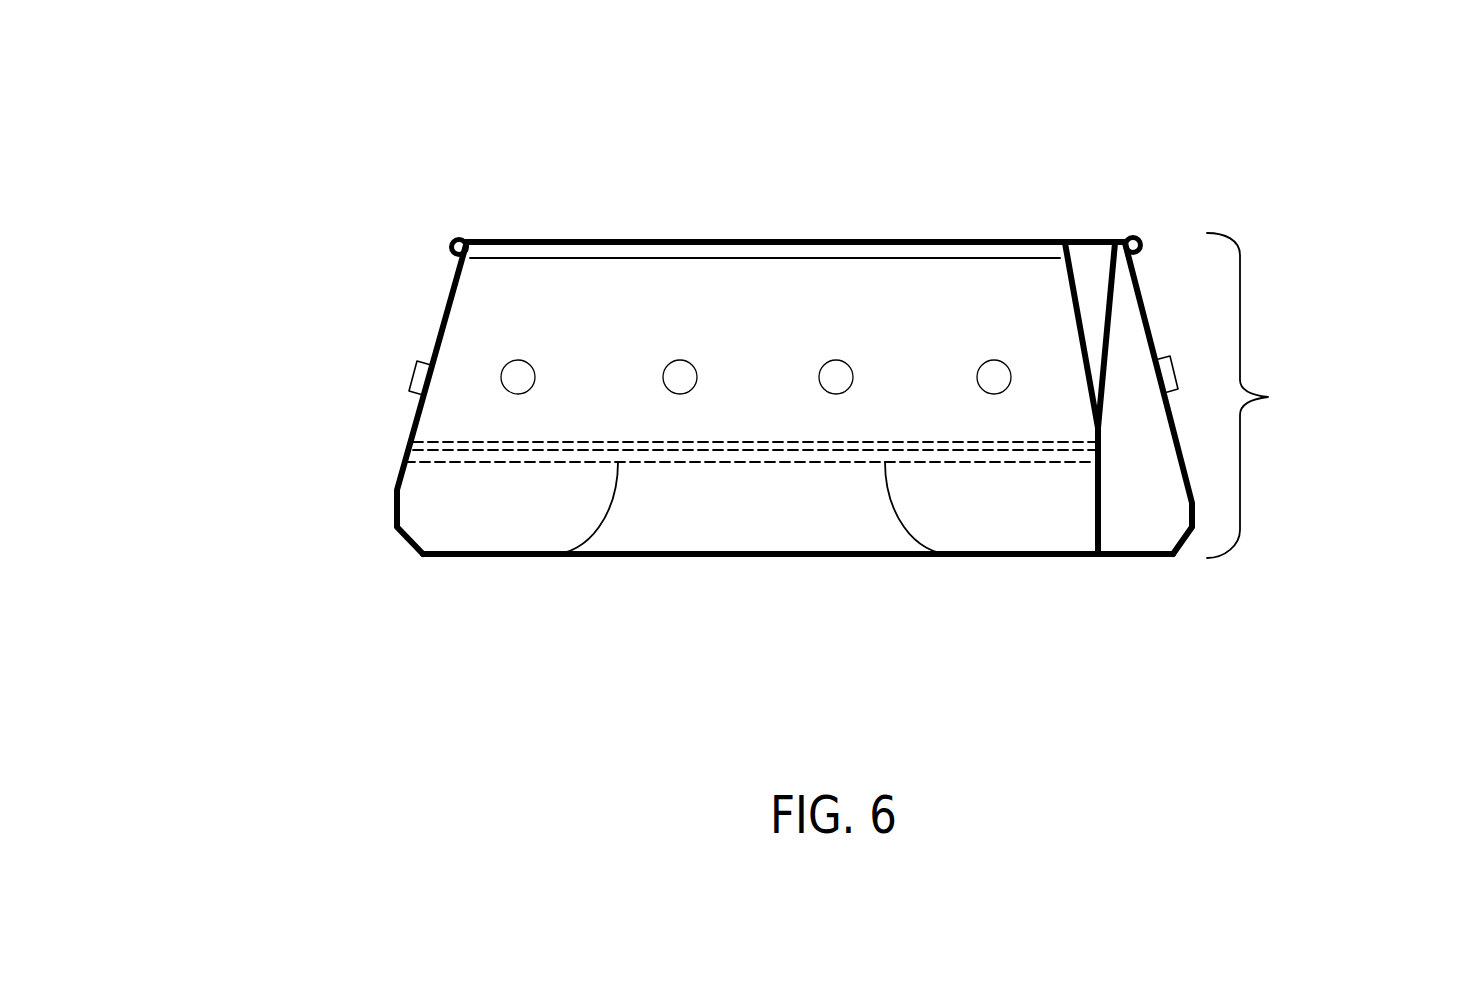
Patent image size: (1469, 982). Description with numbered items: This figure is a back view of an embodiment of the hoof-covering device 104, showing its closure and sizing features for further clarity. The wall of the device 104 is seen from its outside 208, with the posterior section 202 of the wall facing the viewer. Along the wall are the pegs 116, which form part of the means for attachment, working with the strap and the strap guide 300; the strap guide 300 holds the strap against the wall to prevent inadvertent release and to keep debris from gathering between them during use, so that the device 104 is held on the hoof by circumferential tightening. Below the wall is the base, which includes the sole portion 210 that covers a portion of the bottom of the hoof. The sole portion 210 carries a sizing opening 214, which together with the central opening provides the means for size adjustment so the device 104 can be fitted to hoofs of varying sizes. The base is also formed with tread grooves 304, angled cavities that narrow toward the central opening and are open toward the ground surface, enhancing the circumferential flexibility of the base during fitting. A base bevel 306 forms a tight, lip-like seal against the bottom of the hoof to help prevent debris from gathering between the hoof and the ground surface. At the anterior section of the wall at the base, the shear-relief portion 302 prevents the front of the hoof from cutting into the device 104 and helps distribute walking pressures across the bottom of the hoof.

The device 104 is at (1275, 395).
The pegs 116 is at (1170, 387).
The posterior section 202 is at (825, 303).
The outside 208 is at (1040, 350).
The sole portion 210 is at (463, 443).
The sizing opening 214 is at (1103, 480).
The strap guide 300 is at (500, 250).
The shear-relief portion 302 is at (402, 456).
The tread grooves 304 is at (459, 502).
The base bevel 306 is at (903, 472).